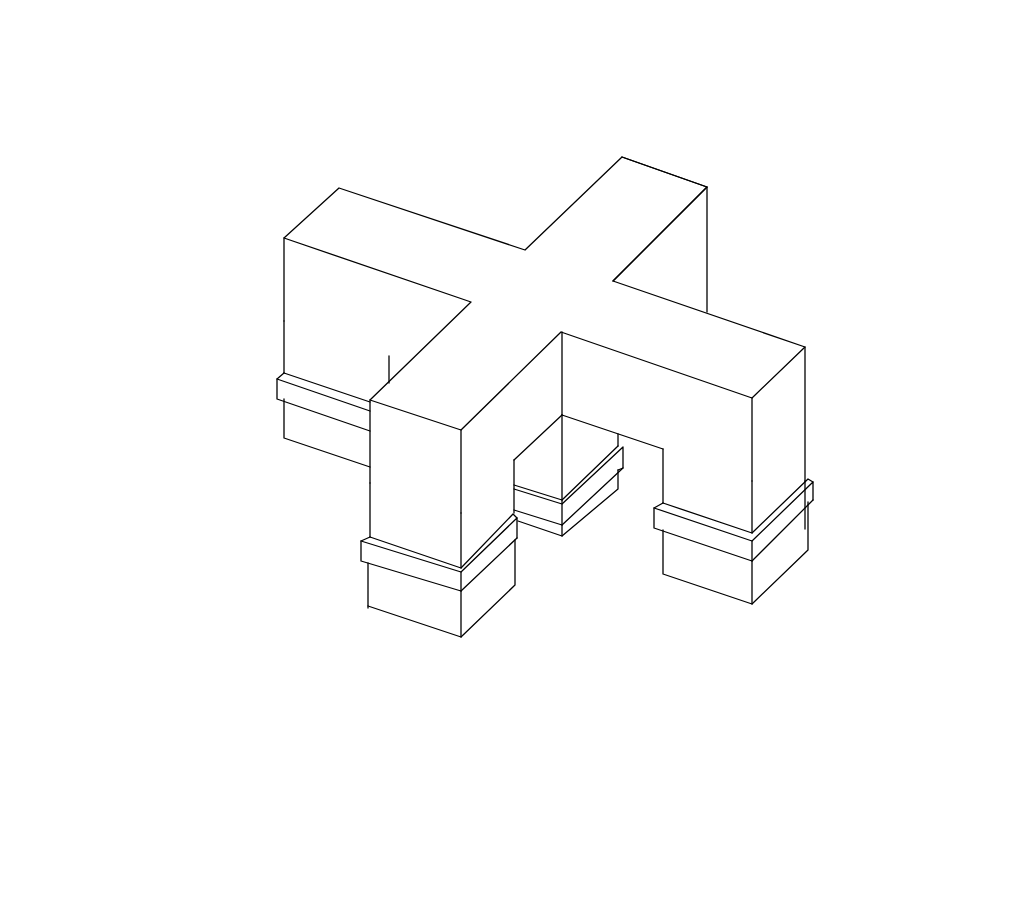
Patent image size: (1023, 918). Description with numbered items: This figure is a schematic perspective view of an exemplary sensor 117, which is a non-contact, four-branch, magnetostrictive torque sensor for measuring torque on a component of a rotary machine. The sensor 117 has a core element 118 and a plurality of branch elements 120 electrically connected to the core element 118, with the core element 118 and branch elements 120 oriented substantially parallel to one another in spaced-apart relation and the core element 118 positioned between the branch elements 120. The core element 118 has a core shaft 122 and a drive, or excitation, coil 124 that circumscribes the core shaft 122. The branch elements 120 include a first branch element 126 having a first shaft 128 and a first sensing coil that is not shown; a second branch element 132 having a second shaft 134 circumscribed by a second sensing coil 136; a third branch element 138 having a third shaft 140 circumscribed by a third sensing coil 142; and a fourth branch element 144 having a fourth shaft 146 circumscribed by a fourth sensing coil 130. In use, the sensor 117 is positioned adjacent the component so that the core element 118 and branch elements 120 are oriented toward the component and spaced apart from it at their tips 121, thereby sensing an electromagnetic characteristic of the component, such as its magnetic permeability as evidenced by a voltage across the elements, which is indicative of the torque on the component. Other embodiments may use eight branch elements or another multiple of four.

The sensor 117 is at (360, 118).
The branch elements 120 is at (833, 380).
The first branch element 126 is at (727, 195).
The first shaft 128 is at (690, 240).
The second branch element 132 is at (247, 340).
The second shaft 134 is at (305, 353).
The second sensing coil 136 is at (292, 392).
The third branch element 138 is at (481, 630).
The third shaft 140 is at (432, 612).
The third sensing coil 142 is at (457, 580).
The fourth branch element 144 is at (851, 474).
The fourth shaft 146 is at (795, 420).
The fourth sensing coil 130 is at (790, 508).
The core element 118 is at (582, 540).
The core shaft 122 is at (584, 459).
The drive coil 124 is at (553, 505).
The tips 121 is at (338, 460).